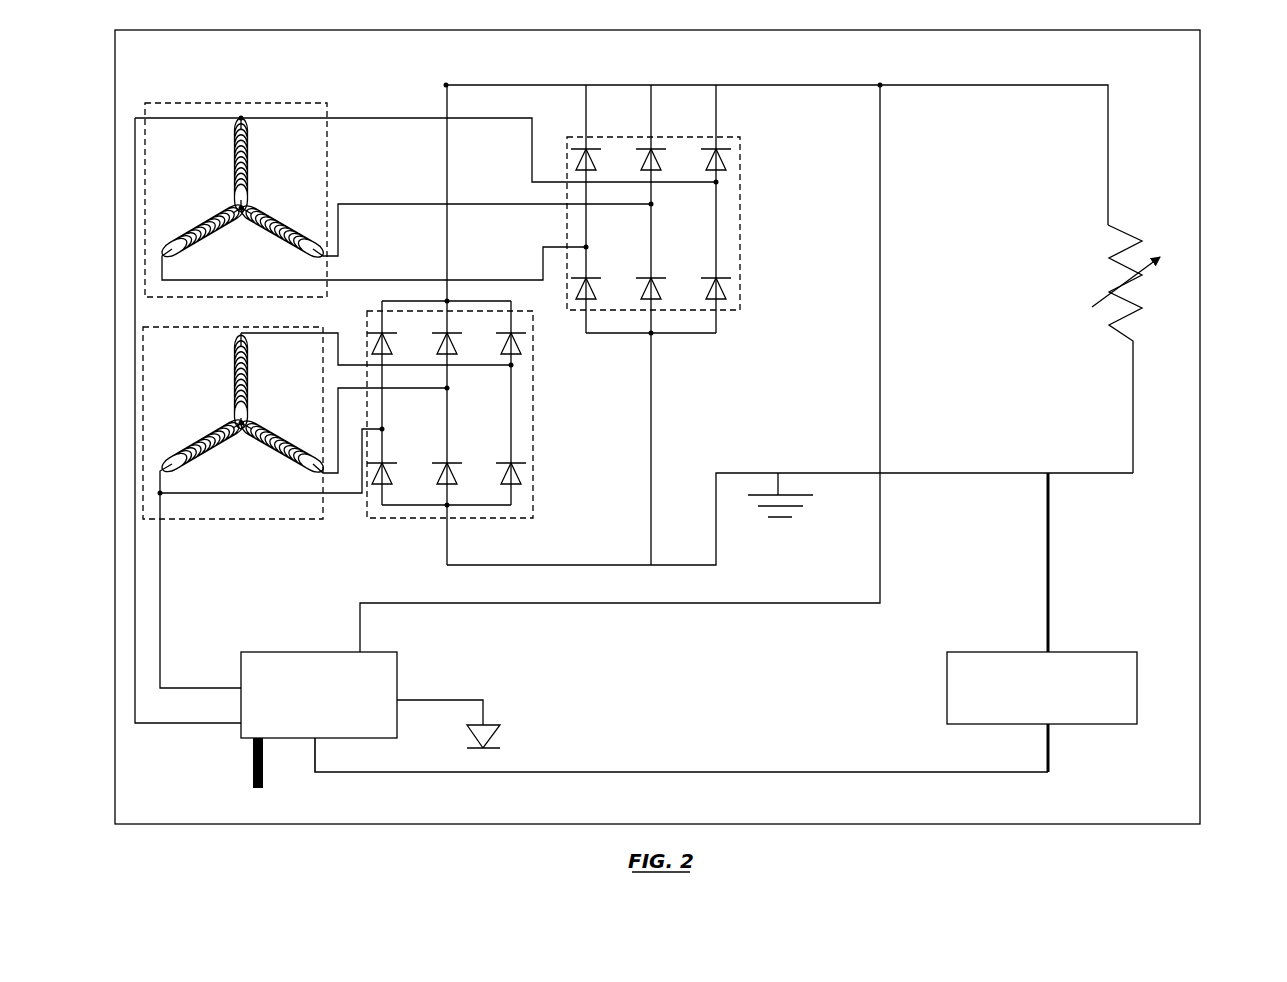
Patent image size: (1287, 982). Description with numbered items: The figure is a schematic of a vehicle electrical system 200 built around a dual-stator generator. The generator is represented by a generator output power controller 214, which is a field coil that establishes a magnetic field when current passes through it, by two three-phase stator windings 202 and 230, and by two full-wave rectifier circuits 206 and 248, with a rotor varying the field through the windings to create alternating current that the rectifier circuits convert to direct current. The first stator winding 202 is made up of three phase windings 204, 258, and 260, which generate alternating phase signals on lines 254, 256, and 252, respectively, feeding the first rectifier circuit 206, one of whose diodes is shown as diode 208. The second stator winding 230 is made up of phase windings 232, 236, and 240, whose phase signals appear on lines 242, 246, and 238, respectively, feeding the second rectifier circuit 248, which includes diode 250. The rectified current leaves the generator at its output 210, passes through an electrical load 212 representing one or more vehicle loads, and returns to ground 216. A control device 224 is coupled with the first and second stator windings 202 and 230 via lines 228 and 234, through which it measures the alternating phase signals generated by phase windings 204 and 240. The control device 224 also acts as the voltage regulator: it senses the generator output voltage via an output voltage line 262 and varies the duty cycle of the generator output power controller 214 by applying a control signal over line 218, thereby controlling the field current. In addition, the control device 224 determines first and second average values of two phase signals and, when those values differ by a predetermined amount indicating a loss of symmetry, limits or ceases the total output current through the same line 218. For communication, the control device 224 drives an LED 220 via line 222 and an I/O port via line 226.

The vehicle electrical system 200 is at (1203, 90).
The first stator winding 202 is at (203, 105).
The phase winding 204 is at (248, 163).
The full-wave rectifier circuit 206 is at (568, 137).
The rectifier diode 208 is at (642, 148).
The output 210 is at (923, 85).
The electrical load 212 is at (1119, 328).
The generator output power controller 214 is at (946, 673).
The ground 216 is at (1016, 473).
The line 218 is at (733, 770).
The LED 220 is at (500, 725).
The line 222 is at (455, 698).
The control device 224 is at (397, 667).
The line 226 is at (262, 765).
The line 228 is at (163, 652).
The second stator winding 230 is at (330, 507).
The phase winding 232 is at (197, 457).
The line 234 is at (137, 602).
The phase winding 236 is at (280, 440).
The line 238 is at (258, 333).
The phase winding 240 is at (232, 393).
The line 242 is at (162, 467).
The line 246 is at (425, 390).
The full-wave rectifier circuit 248 is at (530, 428).
The rectifier diode 250 is at (520, 353).
The line 252 is at (360, 279).
The line 254 is at (530, 137).
The line 256 is at (397, 203).
The phase winding 258 is at (265, 218).
The phase winding 260 is at (197, 227).
The output voltage line 262 is at (790, 603).